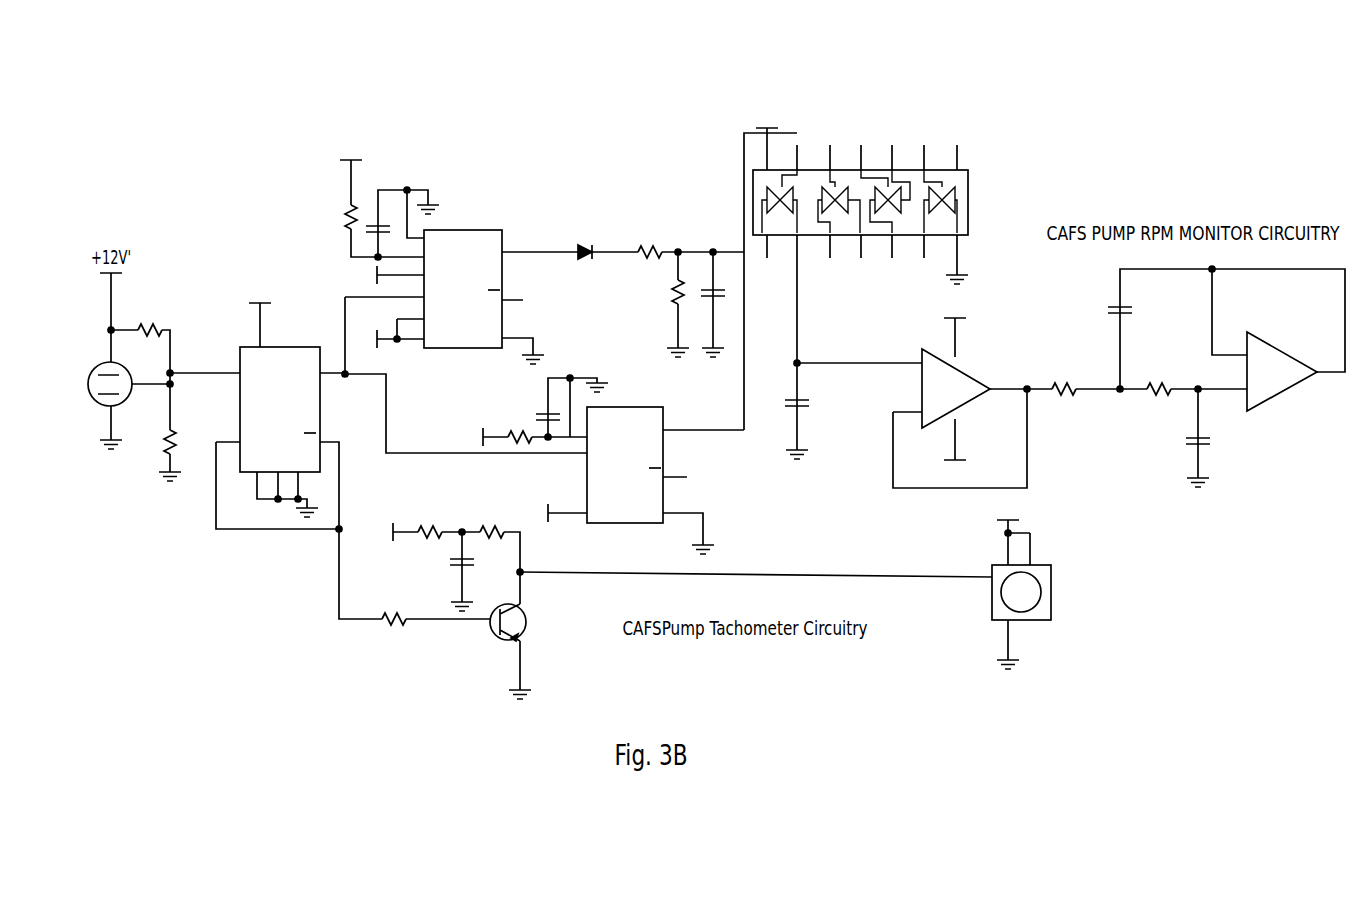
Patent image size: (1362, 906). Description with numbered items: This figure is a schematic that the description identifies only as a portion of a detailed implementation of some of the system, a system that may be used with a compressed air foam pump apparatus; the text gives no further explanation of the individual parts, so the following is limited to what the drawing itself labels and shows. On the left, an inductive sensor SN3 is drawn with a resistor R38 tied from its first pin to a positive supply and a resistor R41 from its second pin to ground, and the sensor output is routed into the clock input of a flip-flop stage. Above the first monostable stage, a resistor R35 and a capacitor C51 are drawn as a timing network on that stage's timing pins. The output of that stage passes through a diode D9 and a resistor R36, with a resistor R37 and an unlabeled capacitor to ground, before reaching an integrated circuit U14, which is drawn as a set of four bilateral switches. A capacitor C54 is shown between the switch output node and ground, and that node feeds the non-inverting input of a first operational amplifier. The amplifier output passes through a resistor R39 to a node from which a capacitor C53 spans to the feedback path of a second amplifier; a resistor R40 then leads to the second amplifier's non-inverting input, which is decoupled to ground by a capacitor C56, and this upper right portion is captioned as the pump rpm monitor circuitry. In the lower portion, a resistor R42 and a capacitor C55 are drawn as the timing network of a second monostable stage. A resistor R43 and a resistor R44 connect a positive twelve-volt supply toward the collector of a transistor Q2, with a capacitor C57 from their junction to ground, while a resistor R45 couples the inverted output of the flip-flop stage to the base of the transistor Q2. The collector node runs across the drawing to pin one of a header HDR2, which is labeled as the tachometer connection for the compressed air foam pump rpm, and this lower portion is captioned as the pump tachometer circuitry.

The resistor 15K R38 is at (140, 324).
The resistor 10K R41 is at (184, 427).
The inductive sensor SN3 is at (120, 432).
The resistor 100K R35 is at (367, 195).
The capacitor .01uF C51 is at (367, 229).
The diode 1N4148 D9 is at (570, 276).
The resistor 1K R36 is at (690, 225).
The resistor 1M R37 is at (660, 304).
The CD4066 quad switch U14 is at (888, 261).
The capacitor C54 is at (802, 358).
The resistor 470K R39 is at (1097, 413).
The capacitor .033uF C53 is at (1200, 327).
The resistor 470K R40 is at (1194, 365).
The capacitor .01uF C56 is at (1217, 438).
The resistor 10K R42 is at (517, 414).
The capacitor 1000pF C55 is at (541, 414).
The resistor 100 R43 is at (414, 508).
The resistor 1K R44 is at (500, 540).
The capacitor 100pF C57 is at (443, 571).
The resistor 10K R45 is at (414, 577).
The transistor 2N3904 Q2 is at (487, 634).
The tachometer header HDR2 is at (1079, 580).